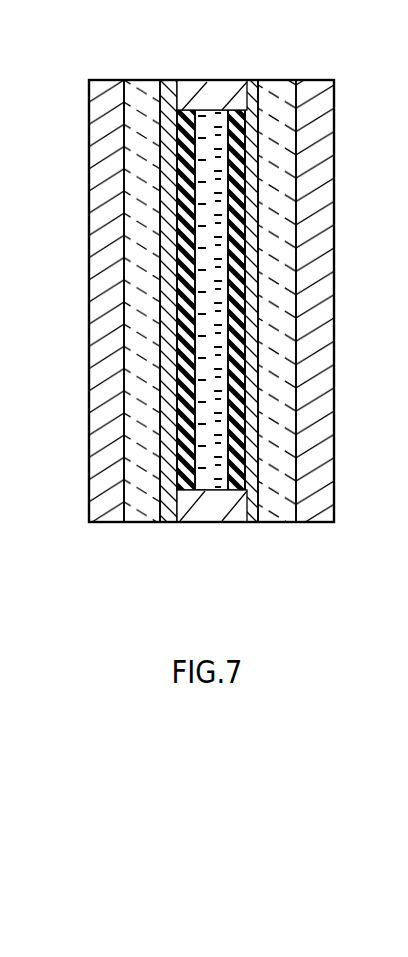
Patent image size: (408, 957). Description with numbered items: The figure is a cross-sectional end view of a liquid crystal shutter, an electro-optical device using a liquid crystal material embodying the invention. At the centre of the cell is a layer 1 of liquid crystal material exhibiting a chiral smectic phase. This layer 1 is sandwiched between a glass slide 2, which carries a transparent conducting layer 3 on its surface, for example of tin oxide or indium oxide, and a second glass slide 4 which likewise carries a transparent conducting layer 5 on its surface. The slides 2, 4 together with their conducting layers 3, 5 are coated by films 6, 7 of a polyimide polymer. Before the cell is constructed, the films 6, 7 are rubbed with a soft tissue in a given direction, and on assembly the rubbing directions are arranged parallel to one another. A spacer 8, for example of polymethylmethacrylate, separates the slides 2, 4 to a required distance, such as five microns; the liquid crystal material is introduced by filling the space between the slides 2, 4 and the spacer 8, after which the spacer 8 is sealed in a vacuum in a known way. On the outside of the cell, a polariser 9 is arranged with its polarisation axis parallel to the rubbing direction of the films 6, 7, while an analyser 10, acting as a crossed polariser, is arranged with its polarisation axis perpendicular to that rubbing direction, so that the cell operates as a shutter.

The layer of liquid crystal material 1 is at (208, 145).
The glass slide 2 is at (140, 103).
The transparent conducting layer 3 is at (160, 450).
The glass slide 4 is at (275, 103).
The transparent conducting layer 5 is at (250, 427).
The polyimide polymer film 6 is at (187, 348).
The polyimide polymer film 7 is at (247, 252).
The spacer 8 is at (192, 100).
The polariser 9 is at (103, 280).
The analyser 10 is at (320, 292).